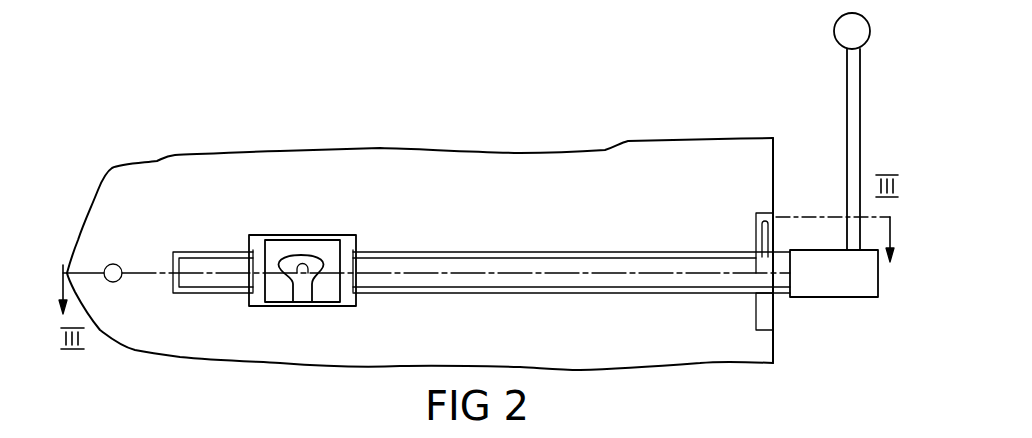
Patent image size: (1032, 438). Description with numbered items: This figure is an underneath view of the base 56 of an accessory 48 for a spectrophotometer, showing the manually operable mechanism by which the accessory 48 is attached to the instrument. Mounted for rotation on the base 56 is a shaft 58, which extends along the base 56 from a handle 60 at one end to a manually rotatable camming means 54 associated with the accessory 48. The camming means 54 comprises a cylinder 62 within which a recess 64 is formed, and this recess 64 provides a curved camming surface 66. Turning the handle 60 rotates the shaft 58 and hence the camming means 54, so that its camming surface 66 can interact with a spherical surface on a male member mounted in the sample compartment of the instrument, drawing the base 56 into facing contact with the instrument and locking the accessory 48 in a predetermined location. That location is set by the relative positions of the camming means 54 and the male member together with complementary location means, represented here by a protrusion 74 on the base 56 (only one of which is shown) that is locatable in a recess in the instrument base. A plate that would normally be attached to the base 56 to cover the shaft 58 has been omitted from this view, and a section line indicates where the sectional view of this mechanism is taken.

The accessory 48 is at (785, 144).
The camming means 54 is at (326, 238).
The base 56 is at (695, 163).
The shaft 58 is at (576, 262).
The handle 60 is at (848, 157).
The cylinder 62 is at (275, 247).
The recess 64 is at (303, 292).
The camming surface 66 is at (292, 263).
The protrusion 74 is at (112, 264).